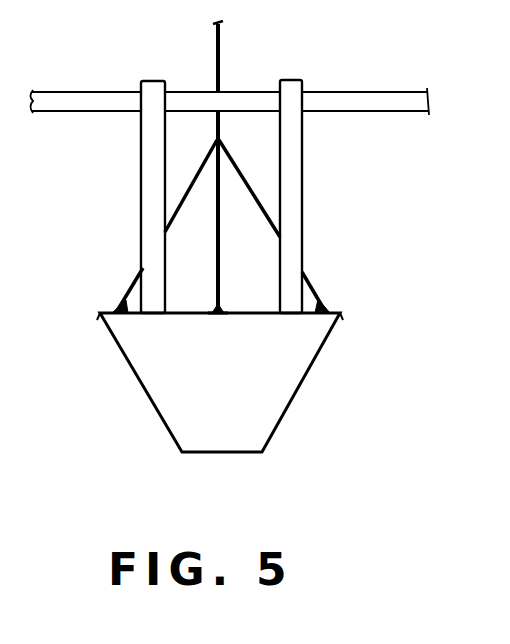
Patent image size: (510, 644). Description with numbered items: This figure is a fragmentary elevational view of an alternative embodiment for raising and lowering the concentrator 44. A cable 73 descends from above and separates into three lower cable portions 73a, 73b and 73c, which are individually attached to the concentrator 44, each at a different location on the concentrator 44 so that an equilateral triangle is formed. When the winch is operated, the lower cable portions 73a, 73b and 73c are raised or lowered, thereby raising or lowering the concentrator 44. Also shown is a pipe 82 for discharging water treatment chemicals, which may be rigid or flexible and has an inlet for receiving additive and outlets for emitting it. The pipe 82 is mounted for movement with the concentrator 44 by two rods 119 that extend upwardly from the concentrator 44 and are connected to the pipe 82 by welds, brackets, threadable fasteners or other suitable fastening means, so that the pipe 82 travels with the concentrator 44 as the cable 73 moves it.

The pipe 82 is at (368, 92).
The rods 119 is at (147, 165).
The cable 73 is at (220, 62).
The lower cable portion 73a is at (126, 291).
The lower cable portion 73b is at (221, 296).
The lower cable portion 73c is at (318, 298).
The concentrator 44 is at (293, 397).